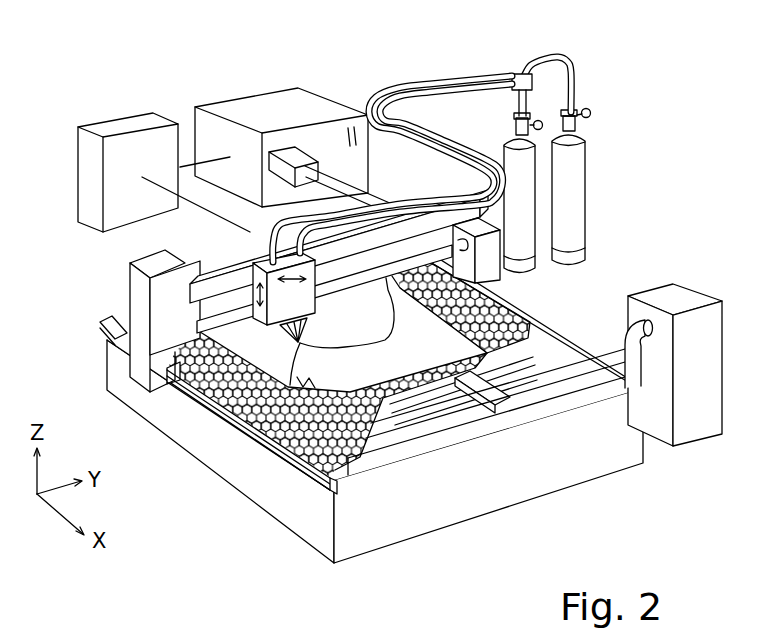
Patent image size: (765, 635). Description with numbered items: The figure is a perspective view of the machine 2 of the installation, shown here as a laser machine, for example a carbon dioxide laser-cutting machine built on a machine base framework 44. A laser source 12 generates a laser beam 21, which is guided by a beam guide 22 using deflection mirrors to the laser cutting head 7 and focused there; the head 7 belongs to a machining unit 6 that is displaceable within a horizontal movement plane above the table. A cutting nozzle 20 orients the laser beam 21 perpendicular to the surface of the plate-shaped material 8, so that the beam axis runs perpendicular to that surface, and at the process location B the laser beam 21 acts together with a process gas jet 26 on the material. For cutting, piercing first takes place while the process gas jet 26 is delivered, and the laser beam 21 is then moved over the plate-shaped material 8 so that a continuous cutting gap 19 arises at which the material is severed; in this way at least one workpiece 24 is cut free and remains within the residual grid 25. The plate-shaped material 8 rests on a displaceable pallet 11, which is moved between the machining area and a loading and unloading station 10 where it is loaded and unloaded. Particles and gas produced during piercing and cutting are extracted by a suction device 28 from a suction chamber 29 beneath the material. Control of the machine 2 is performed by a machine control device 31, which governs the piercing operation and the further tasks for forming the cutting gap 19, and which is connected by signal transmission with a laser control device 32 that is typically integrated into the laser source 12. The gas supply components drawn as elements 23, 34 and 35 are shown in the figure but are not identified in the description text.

The machine 2 is at (88, 280).
The machining unit 6 is at (213, 244).
The laser cutting head 7 is at (247, 363).
The plate-shaped material 8 is at (517, 328).
The loading and unloading station 10 is at (530, 330).
The pallet 11 is at (424, 470).
The laser source 12 is at (262, 107).
The cutting gap 19 is at (387, 345).
The cutting nozzle 20 is at (283, 353).
The laser beam 21 is at (313, 328).
The beam guide 22 is at (435, 262).
The oxygen gas bottle 23 is at (523, 245).
The workpiece 24 is at (470, 300).
The residual grid 25 is at (307, 397).
The process gas jet 26 is at (288, 370).
The suction device 28 is at (675, 297).
The suction chamber 29 is at (473, 410).
The machine control device 31 is at (114, 128).
The laser control device 32 is at (345, 143).
The nitrogen gas bottle 34 is at (568, 150).
The gas supply hose 35 is at (497, 68).
The machine base framework 44 is at (598, 462).
The process location B is at (276, 341).